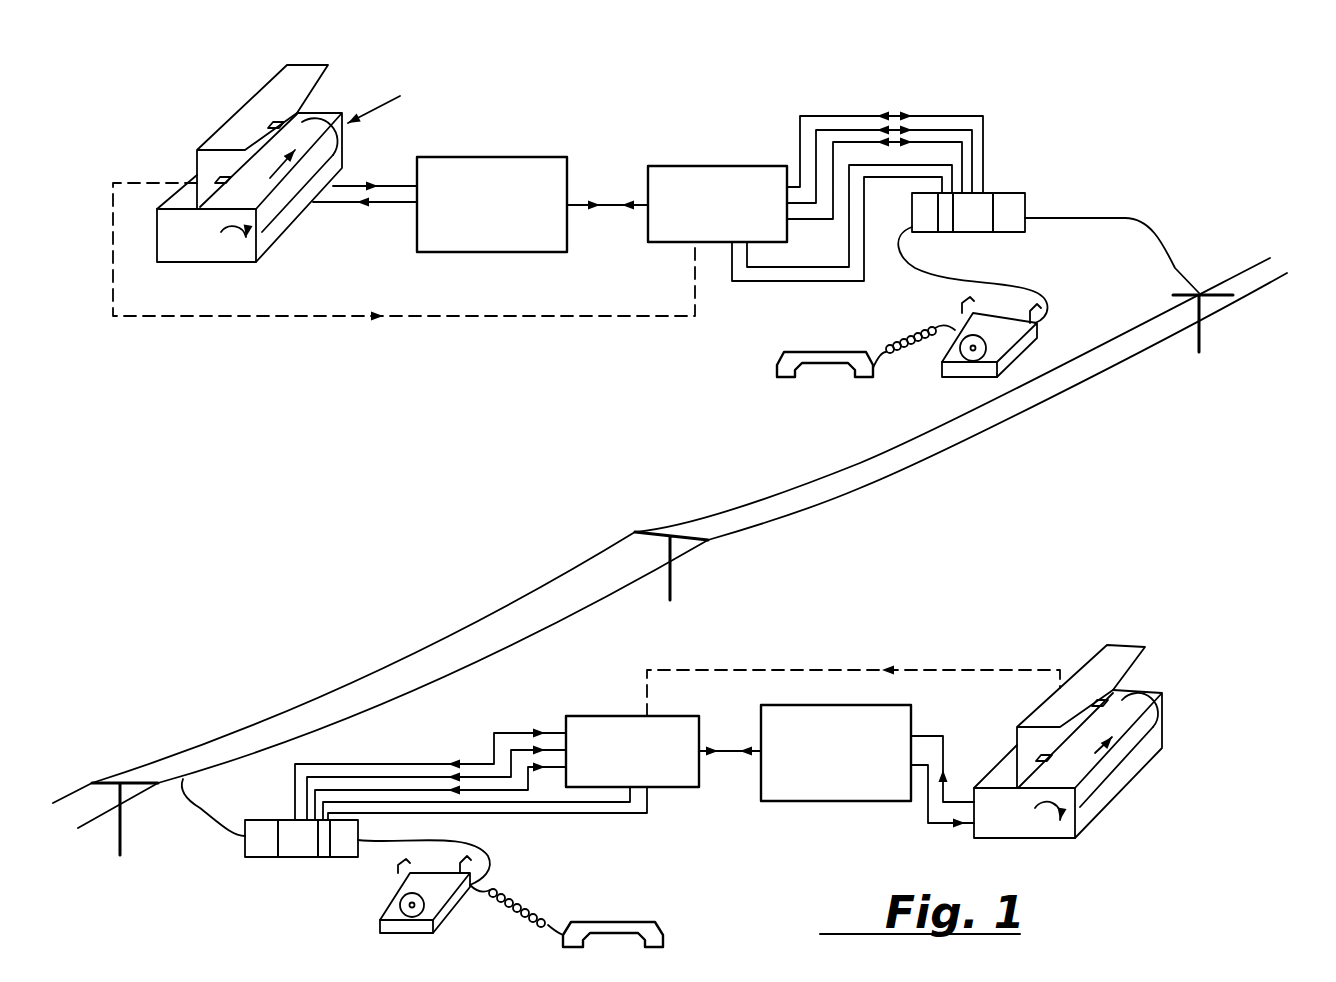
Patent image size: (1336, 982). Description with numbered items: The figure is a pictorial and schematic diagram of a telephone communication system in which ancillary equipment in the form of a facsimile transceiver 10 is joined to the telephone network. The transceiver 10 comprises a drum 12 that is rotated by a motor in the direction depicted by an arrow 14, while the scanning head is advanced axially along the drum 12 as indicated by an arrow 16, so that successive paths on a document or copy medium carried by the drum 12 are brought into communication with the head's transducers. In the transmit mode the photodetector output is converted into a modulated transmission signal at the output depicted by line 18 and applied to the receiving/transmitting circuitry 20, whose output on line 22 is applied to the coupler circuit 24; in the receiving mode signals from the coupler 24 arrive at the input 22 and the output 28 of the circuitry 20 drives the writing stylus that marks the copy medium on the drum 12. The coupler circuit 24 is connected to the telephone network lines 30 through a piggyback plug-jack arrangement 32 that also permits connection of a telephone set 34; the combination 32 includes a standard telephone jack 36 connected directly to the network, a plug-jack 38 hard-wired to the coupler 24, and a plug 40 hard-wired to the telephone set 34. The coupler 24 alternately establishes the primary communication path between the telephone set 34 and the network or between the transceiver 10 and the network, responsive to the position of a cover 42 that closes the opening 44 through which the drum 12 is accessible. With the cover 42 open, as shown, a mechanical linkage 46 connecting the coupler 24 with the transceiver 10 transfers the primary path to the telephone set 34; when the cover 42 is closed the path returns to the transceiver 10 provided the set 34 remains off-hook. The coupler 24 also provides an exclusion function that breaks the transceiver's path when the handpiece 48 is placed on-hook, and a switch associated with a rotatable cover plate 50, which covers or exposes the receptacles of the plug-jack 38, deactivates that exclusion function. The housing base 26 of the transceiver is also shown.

The facsimile transceiver 10 is at (695, 475).
The drum 12 is at (314, 132).
The arrow 14 is at (228, 243).
The arrow 16 is at (278, 170).
The line 18 is at (402, 180).
The receiving/transmitting circuitry 20 is at (497, 157).
The line 22 is at (578, 203).
The coupler circuit 24 is at (683, 165).
The housing base 26 is at (1062, 842).
The output 28 is at (401, 207).
The lines 30 is at (1016, 422).
The piggyback plug-jack arrangement 32 is at (660, 524).
The telephone set 34 is at (953, 368).
The standard telephone jack 36 is at (1040, 232).
The plug-jack 38 is at (982, 233).
The plug 40 is at (930, 233).
The cover 42 is at (230, 118).
The opening 44 is at (386, 104).
The mechanical linkage 46 is at (437, 322).
The handpiece 48 is at (830, 352).
The rotatable cover plate 50 is at (948, 233).